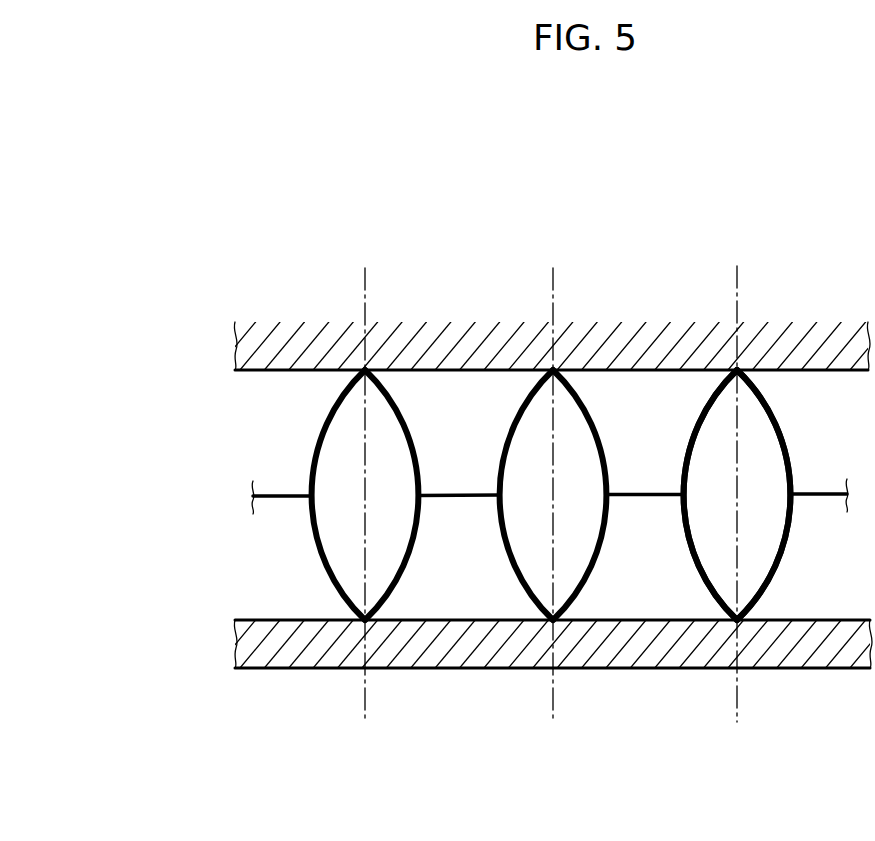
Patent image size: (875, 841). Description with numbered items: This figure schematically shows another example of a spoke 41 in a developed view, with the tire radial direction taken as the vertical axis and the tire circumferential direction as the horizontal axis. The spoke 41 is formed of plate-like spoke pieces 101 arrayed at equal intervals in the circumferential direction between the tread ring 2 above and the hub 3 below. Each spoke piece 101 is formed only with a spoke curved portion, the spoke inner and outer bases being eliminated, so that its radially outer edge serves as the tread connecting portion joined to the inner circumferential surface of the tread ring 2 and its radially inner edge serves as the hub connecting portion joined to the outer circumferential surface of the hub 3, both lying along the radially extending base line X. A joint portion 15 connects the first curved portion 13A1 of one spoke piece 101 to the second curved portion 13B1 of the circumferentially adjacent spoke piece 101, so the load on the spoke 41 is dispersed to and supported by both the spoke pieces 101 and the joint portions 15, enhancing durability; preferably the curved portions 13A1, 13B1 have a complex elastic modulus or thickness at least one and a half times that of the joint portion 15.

The tread ring 2 is at (270, 370).
The hub 3 is at (270, 621).
The spoke 41 is at (475, 471).
The spoke piece 101 is at (772, 390).
The first curved portion 13A1 is at (338, 405).
The second curved portion 13B1 is at (397, 413).
The joint portion 15 is at (460, 497).
The base line X is at (365, 705).